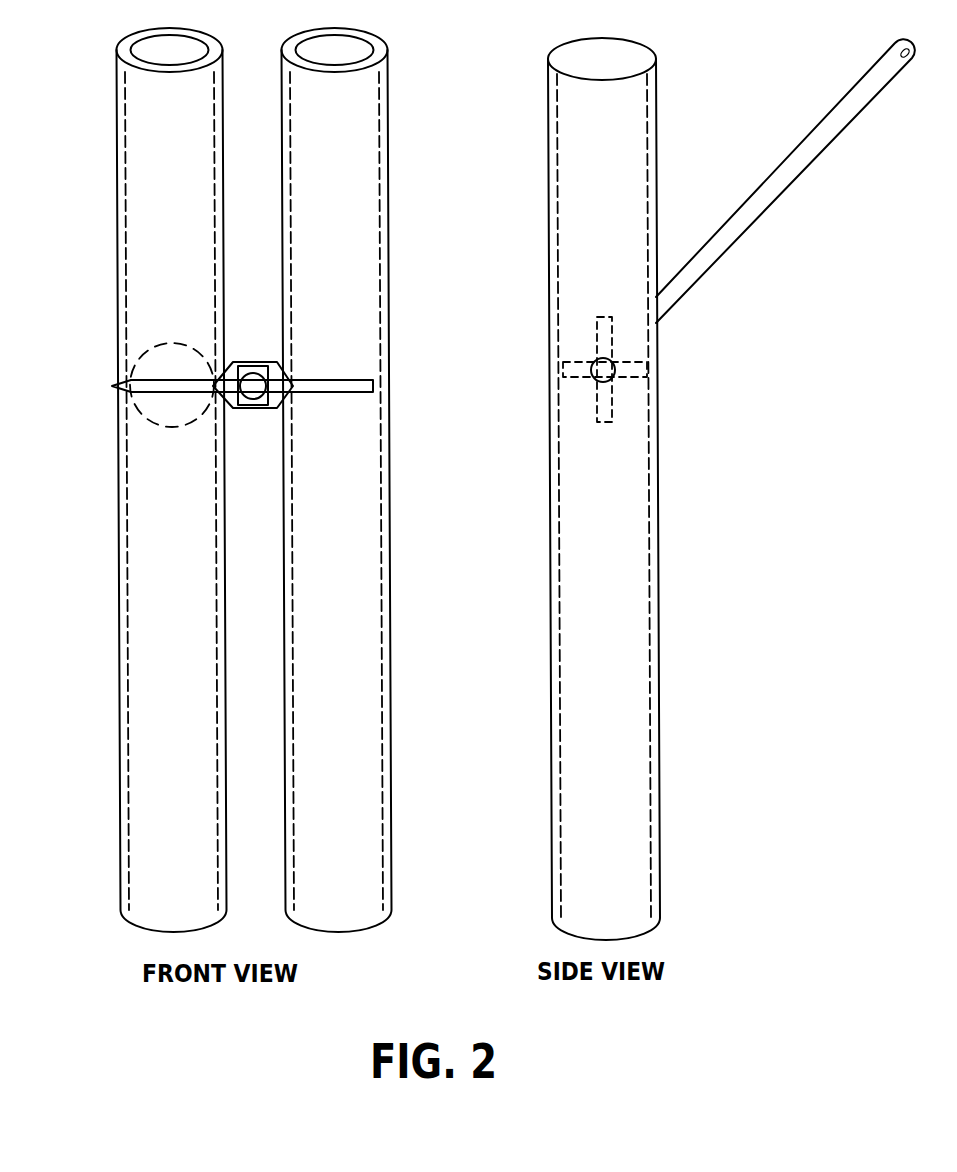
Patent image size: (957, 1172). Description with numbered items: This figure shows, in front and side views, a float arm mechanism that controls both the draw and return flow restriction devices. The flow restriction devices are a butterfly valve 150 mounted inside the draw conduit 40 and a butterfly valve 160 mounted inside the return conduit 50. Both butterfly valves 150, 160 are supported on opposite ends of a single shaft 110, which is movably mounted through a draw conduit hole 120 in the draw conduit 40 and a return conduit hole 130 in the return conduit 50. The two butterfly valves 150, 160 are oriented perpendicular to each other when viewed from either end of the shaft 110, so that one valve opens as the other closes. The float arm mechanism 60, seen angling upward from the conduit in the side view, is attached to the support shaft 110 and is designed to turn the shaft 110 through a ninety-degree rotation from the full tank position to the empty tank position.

The draw conduit 40 is at (117, 240).
The return conduit 50 is at (389, 227).
The float arm mechanism 60 is at (795, 148).
The shaft 110 is at (138, 393).
The draw conduit hole 120 is at (214, 400).
The return conduit hole 130 is at (286, 403).
The butterfly valve 150 is at (170, 363).
The butterfly valve 160 is at (352, 379).